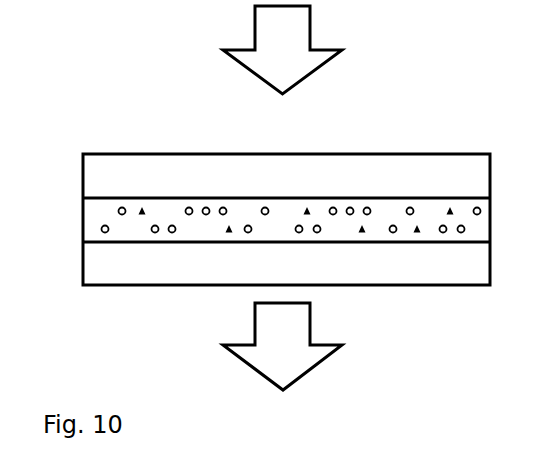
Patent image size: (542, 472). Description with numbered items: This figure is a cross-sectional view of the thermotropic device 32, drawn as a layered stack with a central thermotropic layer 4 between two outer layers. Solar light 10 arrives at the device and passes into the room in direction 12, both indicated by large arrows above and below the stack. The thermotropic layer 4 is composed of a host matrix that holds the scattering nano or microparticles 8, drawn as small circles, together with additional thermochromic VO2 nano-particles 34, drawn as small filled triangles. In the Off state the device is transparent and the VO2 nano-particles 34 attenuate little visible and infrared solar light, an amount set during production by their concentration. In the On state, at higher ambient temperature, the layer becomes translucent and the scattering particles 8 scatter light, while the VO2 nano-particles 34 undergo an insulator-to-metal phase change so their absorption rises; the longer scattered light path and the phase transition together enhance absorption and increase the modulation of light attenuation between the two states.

The solar light 10 is at (282, 50).
The direction 12 is at (282, 346).
The thermotropic device 32 is at (388, 107).
The thermotropic layer 4 is at (388, 208).
The scattering nano or microparticles 8 is at (413, 210).
The thermochromic VO2 nano-particles 34 is at (146, 208).